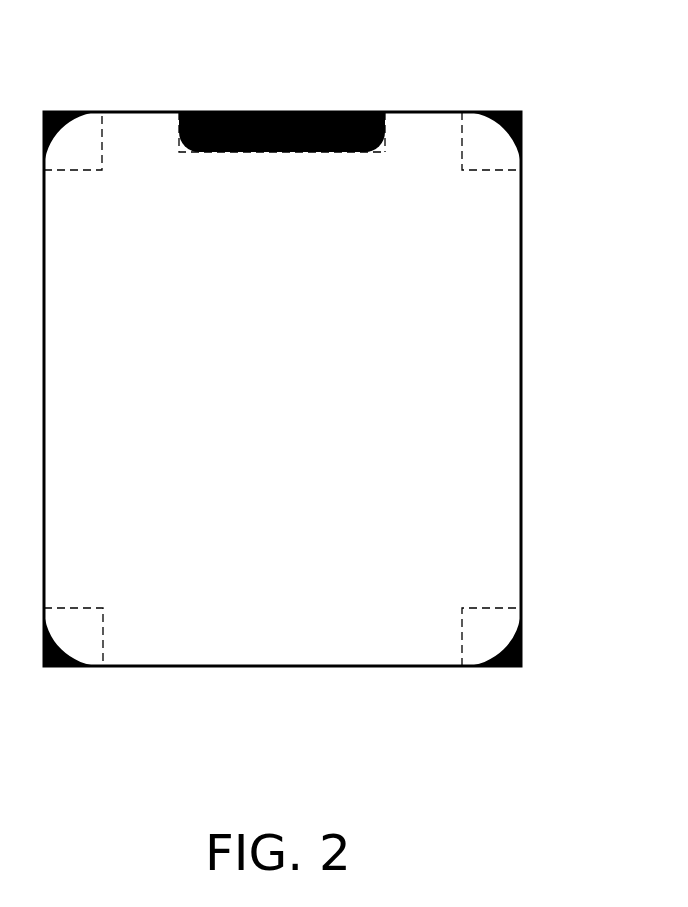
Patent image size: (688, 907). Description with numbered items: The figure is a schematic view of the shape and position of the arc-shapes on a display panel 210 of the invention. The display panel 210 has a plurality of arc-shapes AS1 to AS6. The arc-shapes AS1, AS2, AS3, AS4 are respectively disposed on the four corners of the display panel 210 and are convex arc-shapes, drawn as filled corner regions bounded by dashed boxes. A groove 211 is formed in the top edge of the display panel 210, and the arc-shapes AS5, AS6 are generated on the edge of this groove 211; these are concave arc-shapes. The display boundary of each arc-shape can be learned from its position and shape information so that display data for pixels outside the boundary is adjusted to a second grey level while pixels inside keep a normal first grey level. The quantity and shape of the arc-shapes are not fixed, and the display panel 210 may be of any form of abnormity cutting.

The display panel 210 is at (521, 388).
The groove 211 is at (285, 111).
The arc-shape AS1 is at (102, 139).
The arc-shape AS2 is at (462, 138).
The arc-shape AS3 is at (103, 637).
The arc-shape AS4 is at (462, 637).
The arc-shape AS5 is at (179, 137).
The arc-shape AS6 is at (385, 137).